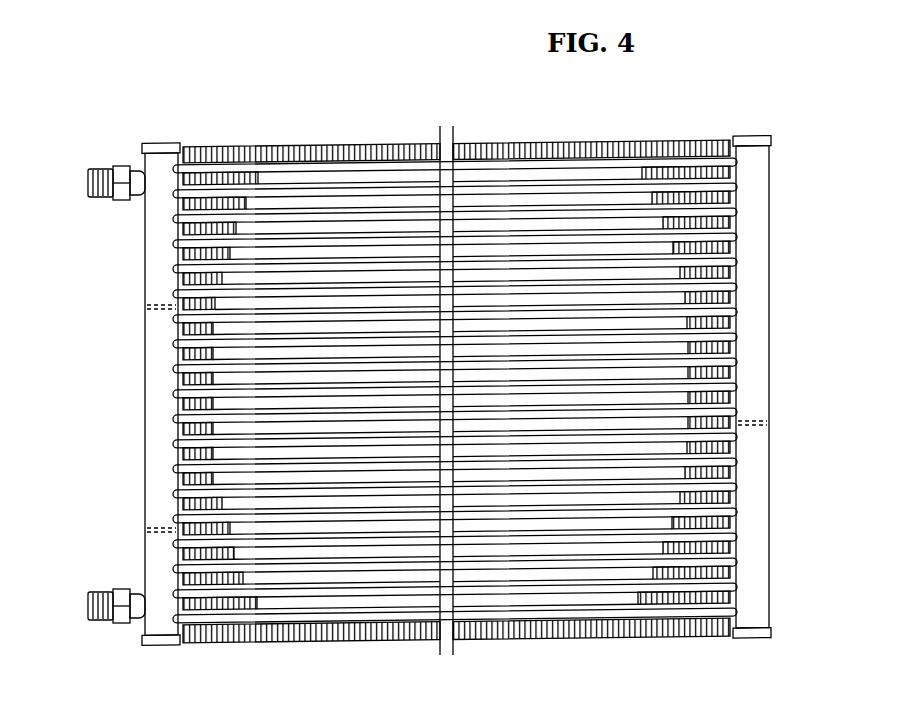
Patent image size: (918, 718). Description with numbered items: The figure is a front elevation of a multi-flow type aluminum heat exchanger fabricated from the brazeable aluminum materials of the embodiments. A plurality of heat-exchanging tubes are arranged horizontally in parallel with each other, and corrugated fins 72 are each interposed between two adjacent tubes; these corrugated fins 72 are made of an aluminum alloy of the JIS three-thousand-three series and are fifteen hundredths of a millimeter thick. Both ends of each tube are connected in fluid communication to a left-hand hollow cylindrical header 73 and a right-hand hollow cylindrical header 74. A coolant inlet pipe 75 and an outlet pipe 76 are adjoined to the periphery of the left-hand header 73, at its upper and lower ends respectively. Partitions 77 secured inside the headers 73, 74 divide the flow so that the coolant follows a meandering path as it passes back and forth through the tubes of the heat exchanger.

The corrugated fins 72 is at (255, 183).
The left-hand hollow cylindrical header 73 is at (155, 403).
The right-hand hollow cylindrical header 74 is at (760, 328).
The coolant inlet pipe 75 is at (90, 177).
The outlet pipe 76 is at (90, 605).
The partitions 77 is at (340, 192).